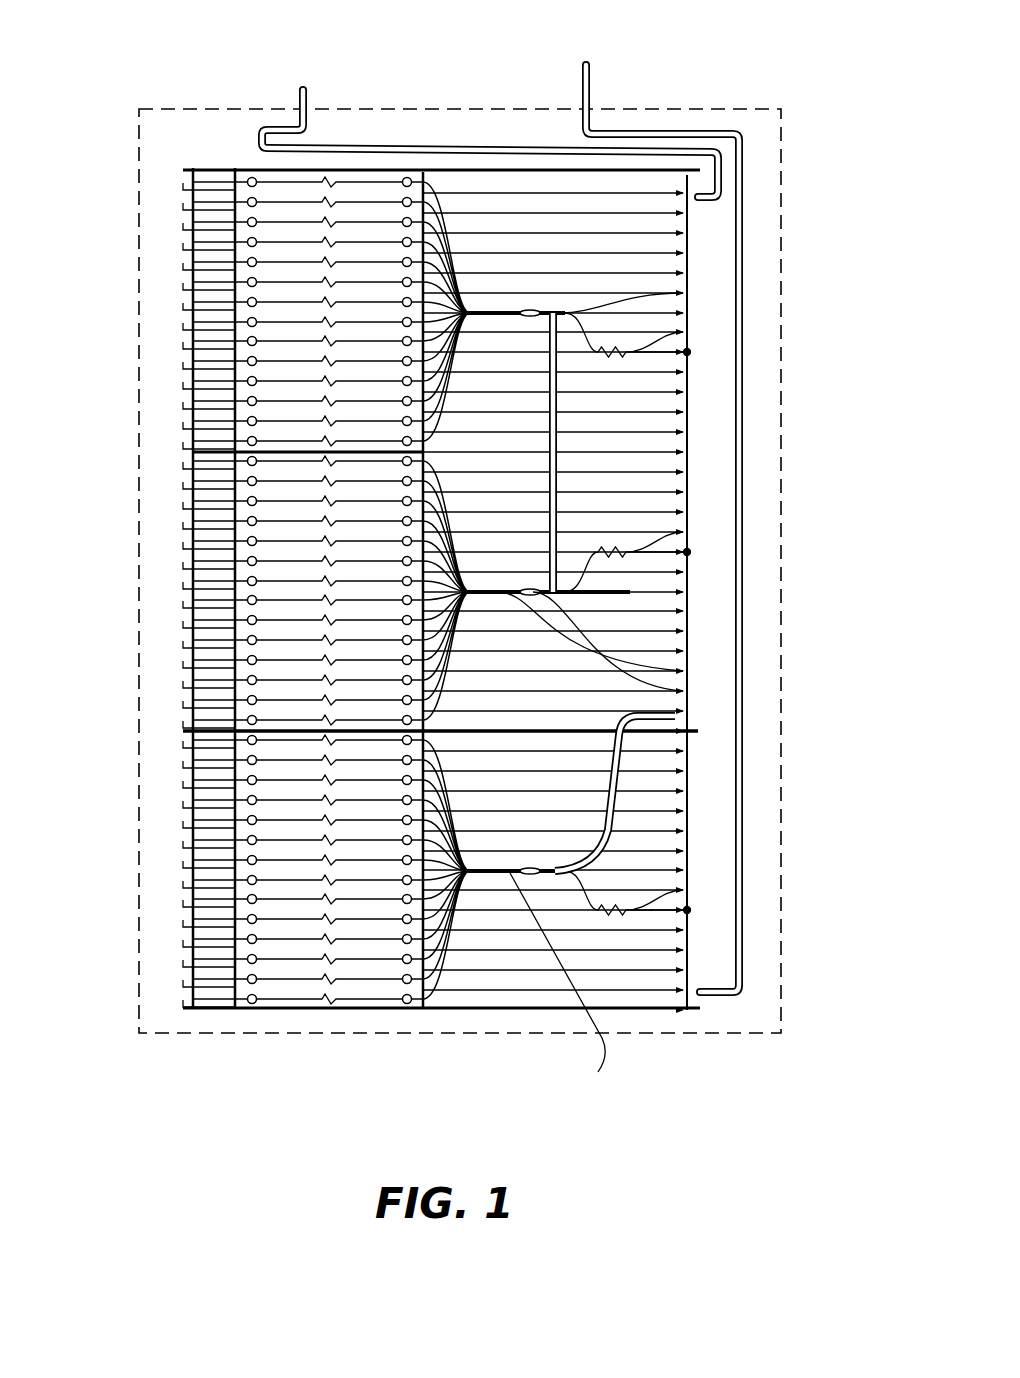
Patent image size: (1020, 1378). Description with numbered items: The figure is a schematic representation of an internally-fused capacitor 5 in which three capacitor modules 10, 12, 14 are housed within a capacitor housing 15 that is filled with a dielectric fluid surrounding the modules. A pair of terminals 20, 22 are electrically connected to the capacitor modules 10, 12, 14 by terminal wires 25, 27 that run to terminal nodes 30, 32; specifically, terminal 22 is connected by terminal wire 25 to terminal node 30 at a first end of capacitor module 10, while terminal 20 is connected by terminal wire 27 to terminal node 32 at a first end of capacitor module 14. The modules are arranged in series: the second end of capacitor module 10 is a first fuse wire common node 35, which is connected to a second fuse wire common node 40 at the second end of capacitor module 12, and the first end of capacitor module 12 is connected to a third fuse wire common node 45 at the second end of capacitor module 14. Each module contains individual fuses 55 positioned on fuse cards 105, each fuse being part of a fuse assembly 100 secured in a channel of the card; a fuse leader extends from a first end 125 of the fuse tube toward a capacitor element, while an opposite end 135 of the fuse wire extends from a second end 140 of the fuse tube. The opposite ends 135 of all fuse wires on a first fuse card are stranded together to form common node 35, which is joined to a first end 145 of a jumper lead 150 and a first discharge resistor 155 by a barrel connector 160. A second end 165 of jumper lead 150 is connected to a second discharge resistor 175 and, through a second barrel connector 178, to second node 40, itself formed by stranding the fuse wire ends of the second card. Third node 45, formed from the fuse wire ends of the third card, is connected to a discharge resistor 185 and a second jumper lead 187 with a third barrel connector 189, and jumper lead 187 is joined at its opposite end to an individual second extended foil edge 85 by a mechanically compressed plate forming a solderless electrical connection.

The internally-fused capacitor 5 is at (116, 506).
The capacitor module 10 is at (702, 444).
The capacitor module 12 is at (690, 614).
The capacitor module 14 is at (690, 940).
The capacitor housing 15 is at (136, 950).
The terminal 20 is at (730, 541).
The terminal 22 is at (506, 109).
The terminal wire 25 is at (537, 109).
The terminal wire 27 is at (730, 562).
The terminal node 30 is at (703, 193).
The terminal node 32 is at (700, 998).
The first fuse wire common node 35 is at (655, 566).
The second fuse wire common node 40 is at (690, 688).
The third fuse wire common node 45 is at (564, 985).
The fuse 55 is at (355, 1008).
The second extended foil edge 85 is at (517, 793).
The fuse assembly 100 is at (405, 176).
The fuse card 105 is at (275, 270).
The first end of fuse tube 125 is at (253, 176).
The opposite end of fuse wire 135 is at (452, 300).
The second end of fuse tube 140 is at (407, 1008).
The first end of jumper lead 145 is at (683, 288).
The jumper lead 150 is at (556, 400).
The first discharge resistor 155 is at (690, 331).
The barrel connector 160 is at (583, 316).
The second end of jumper lead 165 is at (690, 580).
The second discharge resistor 175 is at (690, 540).
The second barrel connector 178 is at (690, 655).
The discharge resistor 185 is at (690, 878).
The second jumper lead 187 is at (617, 779).
The third barrel connector 189 is at (537, 873).